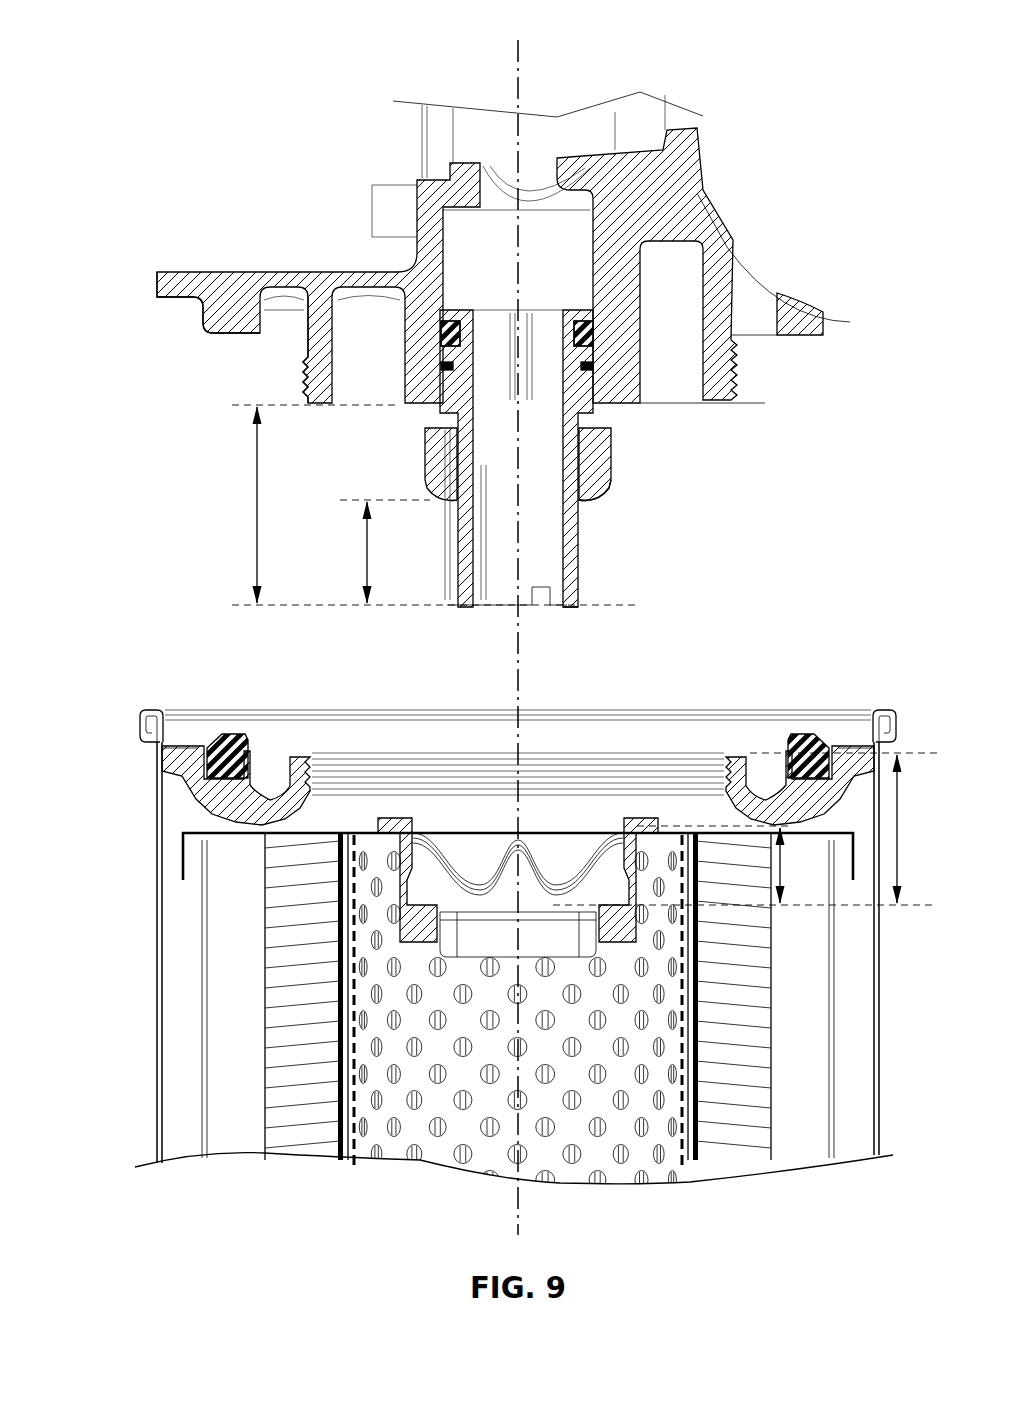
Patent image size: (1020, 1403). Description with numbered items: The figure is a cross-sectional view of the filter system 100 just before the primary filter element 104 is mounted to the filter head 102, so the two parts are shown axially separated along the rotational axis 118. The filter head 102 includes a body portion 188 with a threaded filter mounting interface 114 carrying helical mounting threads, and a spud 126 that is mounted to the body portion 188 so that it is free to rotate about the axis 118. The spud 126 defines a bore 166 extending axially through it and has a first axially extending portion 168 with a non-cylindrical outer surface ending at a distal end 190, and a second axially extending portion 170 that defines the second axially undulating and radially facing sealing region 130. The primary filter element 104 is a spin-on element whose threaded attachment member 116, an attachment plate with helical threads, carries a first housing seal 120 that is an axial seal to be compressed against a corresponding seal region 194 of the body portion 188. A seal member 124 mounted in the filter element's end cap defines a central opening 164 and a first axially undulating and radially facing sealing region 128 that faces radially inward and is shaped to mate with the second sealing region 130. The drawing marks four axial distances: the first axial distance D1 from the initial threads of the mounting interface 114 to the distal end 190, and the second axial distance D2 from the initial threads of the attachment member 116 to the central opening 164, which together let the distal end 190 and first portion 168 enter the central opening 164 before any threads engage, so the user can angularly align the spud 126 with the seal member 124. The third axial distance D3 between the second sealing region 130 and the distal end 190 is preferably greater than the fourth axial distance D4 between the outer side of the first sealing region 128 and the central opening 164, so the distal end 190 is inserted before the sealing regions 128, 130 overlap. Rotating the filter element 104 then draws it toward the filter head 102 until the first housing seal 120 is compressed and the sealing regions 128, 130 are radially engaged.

The filter system 100 is at (797, 108).
The filter head 102 is at (406, 408).
The primary filter element 104 is at (477, 912).
The threaded filter mounting interface 114 is at (314, 324).
The threaded attachment member 116 is at (313, 775).
The rotational axis 118 is at (523, 62).
The first housing seal 120 is at (221, 739).
The seal member 124 is at (638, 822).
The spud 126 is at (613, 438).
The first axially undulating and radially facing sealing region 128 is at (546, 838).
The second axially undulating and radially facing sealing region 130 is at (613, 472).
The central opening 164 is at (487, 912).
The bore 166 is at (496, 598).
The first axially extending portion 168 is at (613, 507).
The second axially extending portion 170 is at (530, 455).
The body portion 188 is at (352, 270).
The distal end 190 is at (571, 609).
The seal region 194 is at (223, 335).
The first axial distance D1 is at (256, 452).
The second axial distance D2 is at (899, 845).
The third axial distance D3 is at (366, 539).
The fourth axial distance D4 is at (783, 880).